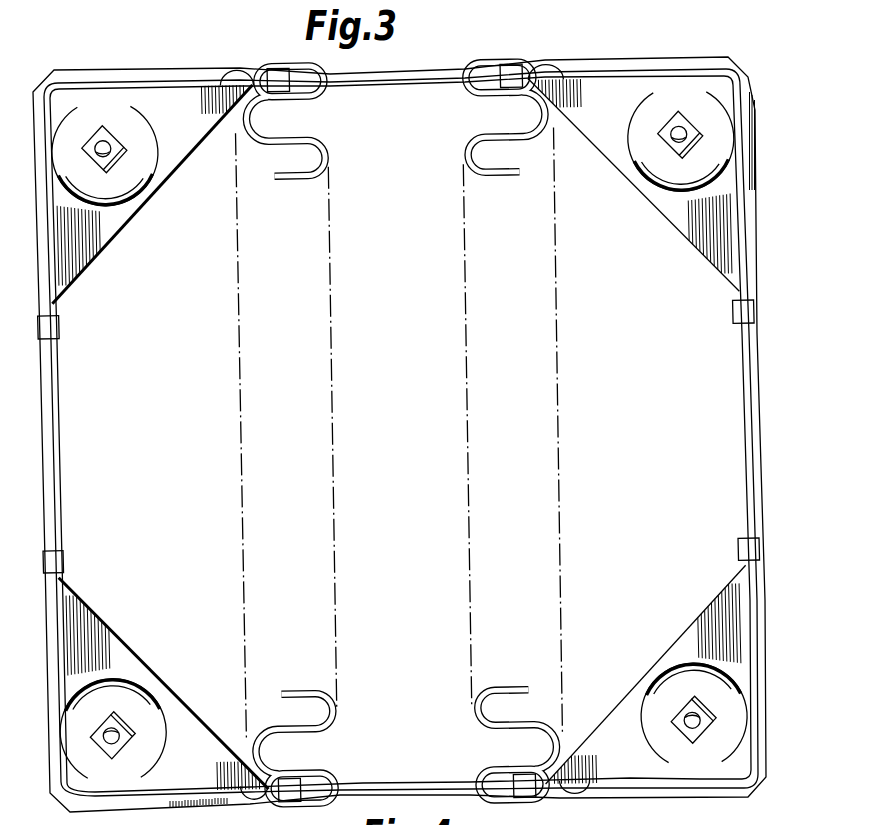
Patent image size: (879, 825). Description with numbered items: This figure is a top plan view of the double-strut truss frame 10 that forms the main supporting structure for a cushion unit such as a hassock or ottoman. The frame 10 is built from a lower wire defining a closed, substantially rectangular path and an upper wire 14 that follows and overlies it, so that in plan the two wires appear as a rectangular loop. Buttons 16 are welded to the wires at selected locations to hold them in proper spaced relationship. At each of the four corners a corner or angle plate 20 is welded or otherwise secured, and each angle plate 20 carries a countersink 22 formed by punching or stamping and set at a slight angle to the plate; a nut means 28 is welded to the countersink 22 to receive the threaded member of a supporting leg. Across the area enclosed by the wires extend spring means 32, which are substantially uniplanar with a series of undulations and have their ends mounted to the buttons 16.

The double-strut truss frame 10 is at (424, 66).
The upper wire 14 is at (50, 446).
The buttons 16 is at (271, 70).
The corner or angle plates 20 is at (95, 238).
The countersink 22 is at (670, 137).
The nut means 28 is at (678, 715).
The spring means 32 is at (327, 154).